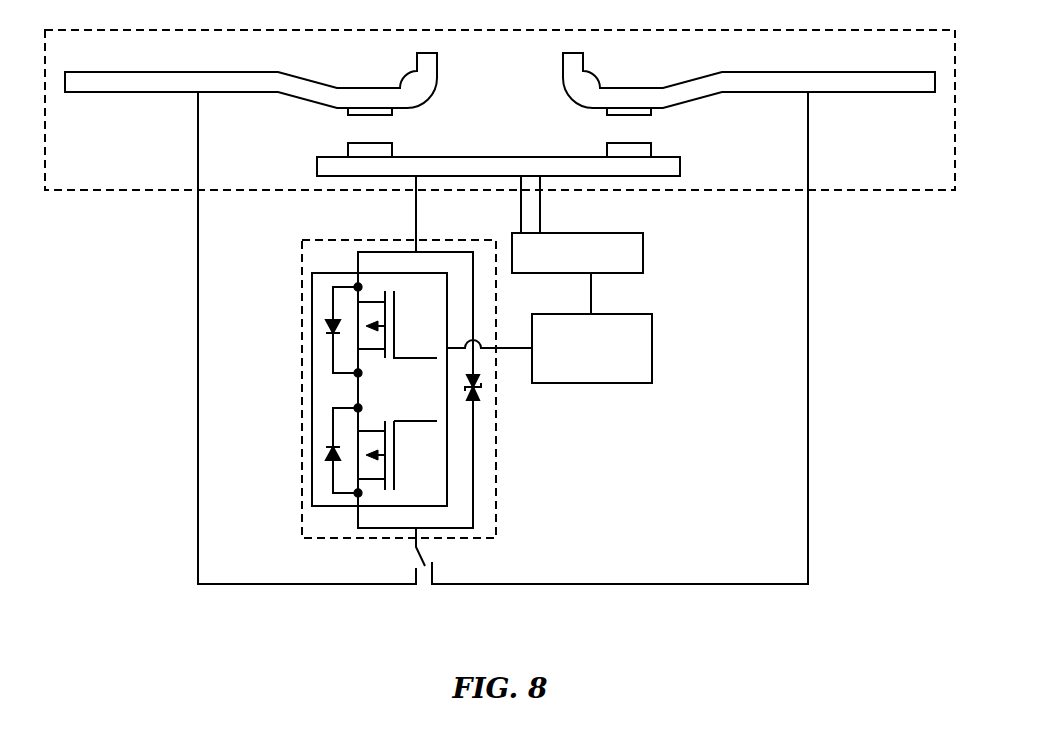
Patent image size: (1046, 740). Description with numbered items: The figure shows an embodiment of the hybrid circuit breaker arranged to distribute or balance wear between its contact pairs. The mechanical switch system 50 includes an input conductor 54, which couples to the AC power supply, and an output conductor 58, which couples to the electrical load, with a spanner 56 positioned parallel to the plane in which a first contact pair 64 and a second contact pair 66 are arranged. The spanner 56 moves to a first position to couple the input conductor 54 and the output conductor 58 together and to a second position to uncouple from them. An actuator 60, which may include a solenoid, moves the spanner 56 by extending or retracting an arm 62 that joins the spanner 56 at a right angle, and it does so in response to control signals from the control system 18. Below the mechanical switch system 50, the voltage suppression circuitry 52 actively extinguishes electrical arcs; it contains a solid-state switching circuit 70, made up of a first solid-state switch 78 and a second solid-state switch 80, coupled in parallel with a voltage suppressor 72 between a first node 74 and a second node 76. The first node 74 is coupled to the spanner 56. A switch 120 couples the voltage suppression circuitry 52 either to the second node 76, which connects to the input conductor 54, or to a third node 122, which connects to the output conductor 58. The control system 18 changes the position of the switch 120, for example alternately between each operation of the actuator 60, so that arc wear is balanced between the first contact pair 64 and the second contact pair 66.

The mechanical switch system 50 is at (489, 30).
The input conductor 54 is at (176, 72).
The output conductor 58 is at (826, 72).
The spanner 56 is at (500, 157).
The first contact pair 64 is at (348, 111).
The second contact pair 66 is at (651, 111).
The arm 62 is at (540, 222).
The actuator 60 is at (596, 233).
The control system 18 is at (652, 345).
The voltage suppression circuitry 52 is at (302, 418).
The first node 74 is at (357, 263).
The solid-state switching circuit 70 is at (312, 370).
The second solid-state switch 80 is at (394, 326).
The first solid-state switch 78 is at (394, 455).
The voltage suppressor 72 is at (481, 392).
The second node 76 is at (198, 326).
The third node 122 is at (808, 326).
The switch 120 is at (432, 572).